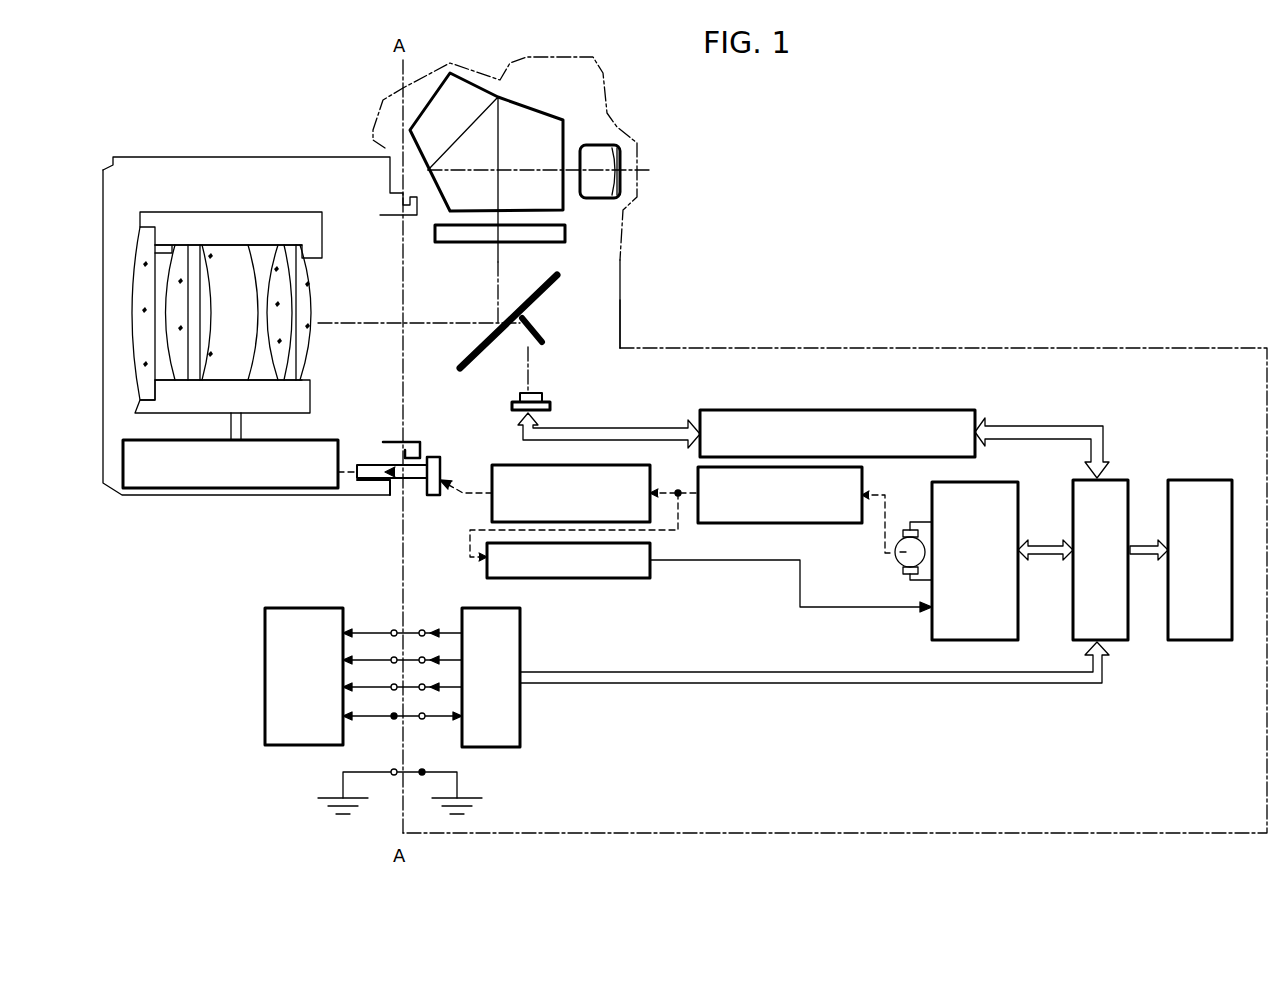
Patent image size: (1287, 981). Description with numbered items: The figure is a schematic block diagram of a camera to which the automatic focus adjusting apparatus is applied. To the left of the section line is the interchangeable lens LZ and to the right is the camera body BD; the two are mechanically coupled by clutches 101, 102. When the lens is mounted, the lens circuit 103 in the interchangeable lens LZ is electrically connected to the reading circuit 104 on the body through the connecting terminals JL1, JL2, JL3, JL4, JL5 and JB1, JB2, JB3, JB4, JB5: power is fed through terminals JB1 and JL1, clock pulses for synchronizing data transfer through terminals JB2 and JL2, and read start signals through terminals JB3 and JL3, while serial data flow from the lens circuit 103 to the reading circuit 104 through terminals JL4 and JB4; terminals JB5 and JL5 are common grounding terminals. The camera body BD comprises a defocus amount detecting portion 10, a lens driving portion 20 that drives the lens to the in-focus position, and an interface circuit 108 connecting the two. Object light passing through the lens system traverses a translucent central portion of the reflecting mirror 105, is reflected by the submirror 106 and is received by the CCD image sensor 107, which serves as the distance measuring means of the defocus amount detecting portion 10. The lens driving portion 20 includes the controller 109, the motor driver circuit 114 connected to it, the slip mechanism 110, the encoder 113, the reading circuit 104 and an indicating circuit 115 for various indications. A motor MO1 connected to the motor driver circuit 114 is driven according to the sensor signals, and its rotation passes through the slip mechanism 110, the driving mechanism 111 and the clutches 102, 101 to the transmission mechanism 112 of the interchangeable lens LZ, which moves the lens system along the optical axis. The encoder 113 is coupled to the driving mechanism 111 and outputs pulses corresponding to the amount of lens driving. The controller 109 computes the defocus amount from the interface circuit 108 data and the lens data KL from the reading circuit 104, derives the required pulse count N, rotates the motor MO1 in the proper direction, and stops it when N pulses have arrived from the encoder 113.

The camera body BD is at (622, 112).
The interchangeable lens LZ is at (148, 158).
The defocus amount detecting portion 10 is at (640, 322).
The lens driving portion 20 is at (1118, 432).
The clutch 101 is at (357, 462).
The clutch 102 is at (425, 487).
The lens circuit 103 is at (290, 748).
The reading circuit 104 is at (525, 715).
The reflecting mirror 105 is at (548, 290).
The submirror 106 is at (540, 330).
The CCD image sensor 107 is at (520, 396).
The interface circuit 108 is at (960, 412).
The controller 109 is at (1073, 640).
The slip mechanism 110 is at (845, 524).
The driving mechanism 111 is at (496, 465).
The transmission mechanism 112 is at (135, 495).
The encoder 113 is at (610, 579).
The motor driver circuit 114 is at (932, 640).
The indicating circuit 115 is at (1168, 642).
The motor MO1 is at (902, 570).
The number of pulses N is at (1045, 552).
The connecting terminal JL1 is at (373, 625).
The connecting terminal JL2 is at (373, 652).
The connecting terminal JL3 is at (373, 679).
The connecting terminal JL4 is at (373, 708).
The connecting terminal JL5 is at (374, 782).
The connecting terminal JB1 is at (419, 625).
The connecting terminal JB2 is at (419, 652).
The connecting terminal JB3 is at (419, 679).
The connecting terminal JB4 is at (419, 708).
The connecting terminal JB5 is at (419, 782).